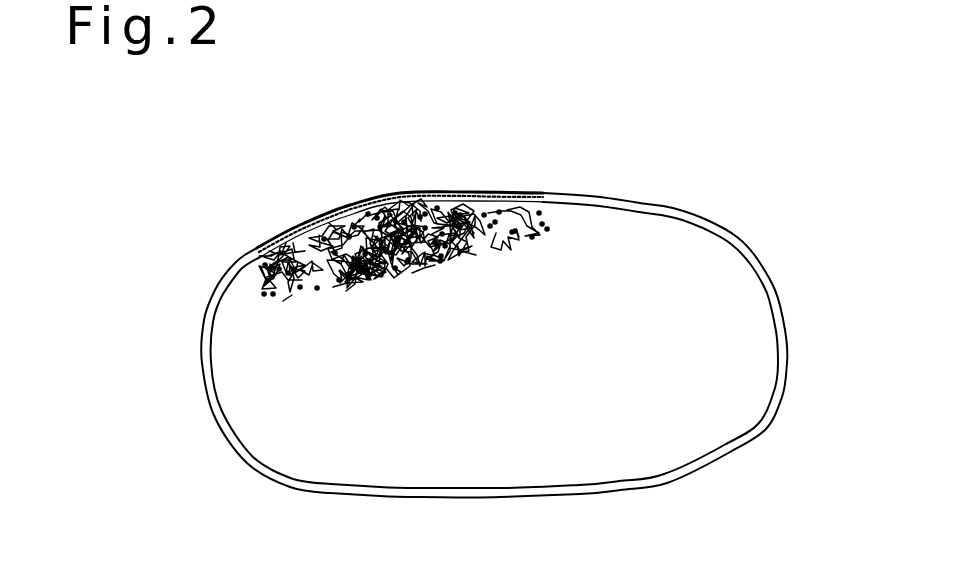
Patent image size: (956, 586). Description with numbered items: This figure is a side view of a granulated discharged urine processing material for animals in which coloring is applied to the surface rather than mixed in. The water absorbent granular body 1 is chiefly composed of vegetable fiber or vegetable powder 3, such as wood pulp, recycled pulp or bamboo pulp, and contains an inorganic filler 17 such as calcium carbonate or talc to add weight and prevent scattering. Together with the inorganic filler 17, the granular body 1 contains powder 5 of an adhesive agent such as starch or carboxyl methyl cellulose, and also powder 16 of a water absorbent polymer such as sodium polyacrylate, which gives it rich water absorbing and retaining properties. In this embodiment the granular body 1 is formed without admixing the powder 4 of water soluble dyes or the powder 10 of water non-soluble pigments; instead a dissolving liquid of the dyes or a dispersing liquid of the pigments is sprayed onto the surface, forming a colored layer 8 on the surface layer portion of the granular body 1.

The water absorbent granular body 1 is at (774, 314).
The vegetable fiber or vegetable powder 3 is at (432, 268).
The powder of water soluble dyes 4 is at (333, 288).
The powder of adhesive agent 5 is at (293, 223).
The colored layer 8 is at (463, 196).
The powder of water non-soluble pigments 10 is at (404, 281).
The powder of water absorbent polymer 16 is at (488, 256).
The inorganic filler 17 is at (410, 196).